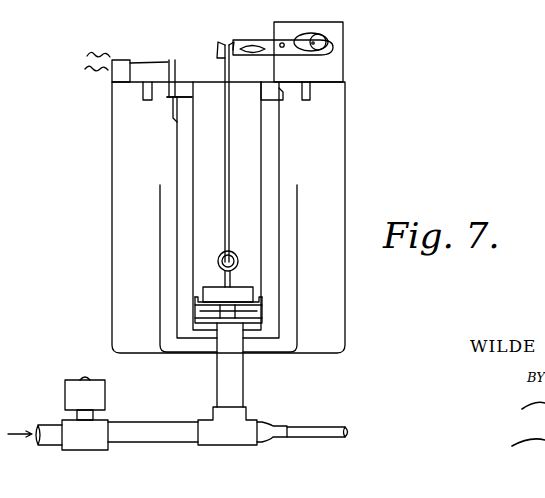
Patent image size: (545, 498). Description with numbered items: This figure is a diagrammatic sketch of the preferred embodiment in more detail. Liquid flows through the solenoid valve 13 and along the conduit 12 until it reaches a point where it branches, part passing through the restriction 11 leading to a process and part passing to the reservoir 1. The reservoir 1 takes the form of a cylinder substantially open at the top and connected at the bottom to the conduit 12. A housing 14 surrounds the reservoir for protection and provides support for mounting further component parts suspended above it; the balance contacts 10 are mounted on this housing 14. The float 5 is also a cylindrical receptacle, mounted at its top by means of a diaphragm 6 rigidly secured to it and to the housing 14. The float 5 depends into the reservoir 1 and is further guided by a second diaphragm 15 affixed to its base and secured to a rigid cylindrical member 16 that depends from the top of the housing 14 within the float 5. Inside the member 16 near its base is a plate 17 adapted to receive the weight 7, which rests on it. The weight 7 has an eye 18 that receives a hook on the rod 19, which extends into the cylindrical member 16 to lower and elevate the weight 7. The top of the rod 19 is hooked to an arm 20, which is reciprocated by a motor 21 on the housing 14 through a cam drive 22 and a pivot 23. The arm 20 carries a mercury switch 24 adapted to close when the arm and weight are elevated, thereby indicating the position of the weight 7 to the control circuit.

The reservoir 1 is at (160, 257).
The float 5 is at (177, 148).
The diaphragm 6 is at (162, 98).
The weight 7 is at (243, 290).
The balance contacts 10 is at (158, 62).
The restriction 11 is at (281, 427).
The conduit 12 is at (174, 430).
The solenoid valve 13 is at (58, 413).
The housing 14 is at (112, 277).
The second diaphragm 15 is at (247, 325).
The rigid cylindrical member 16 is at (261, 146).
The plate 17 is at (262, 301).
The eye 18 is at (236, 251).
The rod 19 is at (229, 163).
The arm 20 is at (234, 42).
The motor 21 is at (340, 24).
The cam drive 22 is at (329, 42).
The pivot 23 is at (284, 43).
The mercury switch 24 is at (250, 42).